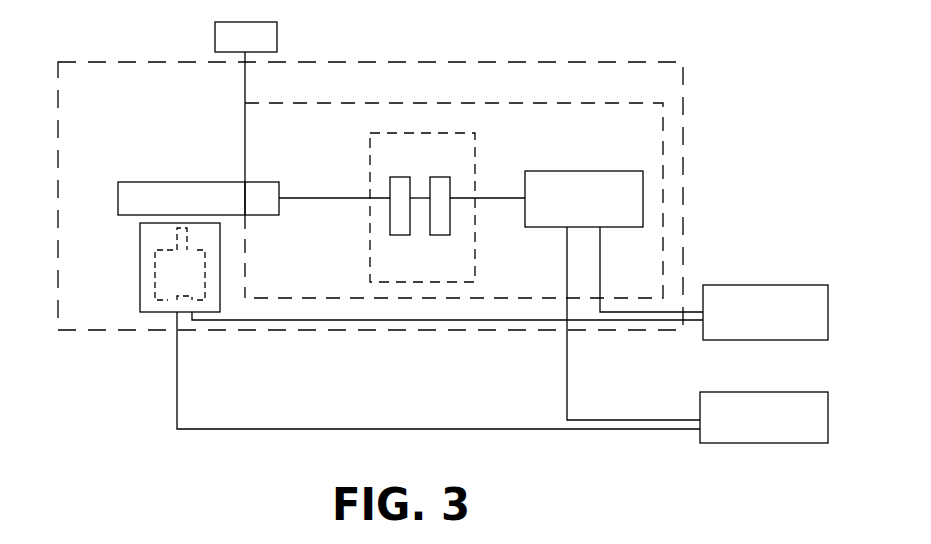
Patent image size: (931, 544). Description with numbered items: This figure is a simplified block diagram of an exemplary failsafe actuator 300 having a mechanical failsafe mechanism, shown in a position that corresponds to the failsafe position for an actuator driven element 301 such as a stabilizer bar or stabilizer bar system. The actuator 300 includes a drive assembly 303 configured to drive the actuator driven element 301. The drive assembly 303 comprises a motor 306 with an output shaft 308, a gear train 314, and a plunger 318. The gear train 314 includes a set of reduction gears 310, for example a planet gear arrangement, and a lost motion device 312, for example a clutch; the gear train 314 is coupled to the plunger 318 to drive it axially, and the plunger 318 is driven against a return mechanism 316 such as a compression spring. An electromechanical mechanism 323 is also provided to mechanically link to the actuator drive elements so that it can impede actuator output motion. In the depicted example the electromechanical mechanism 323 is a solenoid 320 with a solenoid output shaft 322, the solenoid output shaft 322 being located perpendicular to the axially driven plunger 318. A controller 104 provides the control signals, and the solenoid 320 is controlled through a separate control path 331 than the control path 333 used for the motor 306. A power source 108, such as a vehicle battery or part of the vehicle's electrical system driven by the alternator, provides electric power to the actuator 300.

The failsafe actuator 300 is at (58, 62).
The actuator driven element 301 is at (246, 118).
The drive assembly 303 is at (663, 157).
The motor 306 is at (585, 171).
The output shaft 308 is at (495, 198).
The reduction gears 310 is at (450, 235).
The lost motion device 312 is at (392, 235).
The gear train 314 is at (400, 133).
The return mechanism 316 is at (150, 182).
The plunger 318 is at (265, 182).
The solenoid 320 is at (140, 292).
The solenoid output shaft 322 is at (178, 228).
The electromechanical mechanism 323 is at (140, 255).
The control path 331 is at (233, 430).
The control path 333 is at (567, 395).
The controller 104 is at (700, 436).
The power source 108 is at (752, 285).